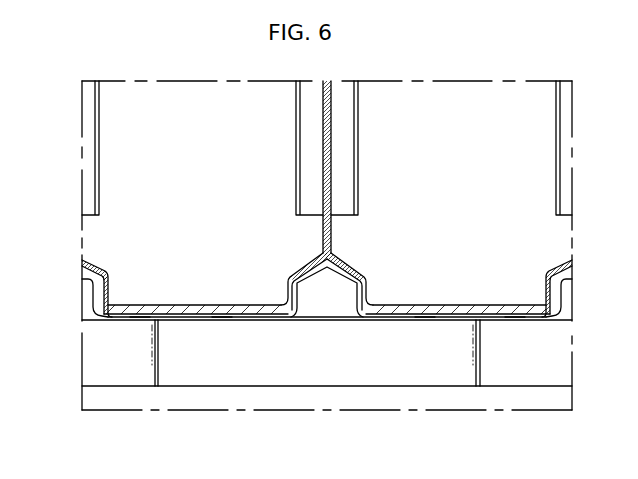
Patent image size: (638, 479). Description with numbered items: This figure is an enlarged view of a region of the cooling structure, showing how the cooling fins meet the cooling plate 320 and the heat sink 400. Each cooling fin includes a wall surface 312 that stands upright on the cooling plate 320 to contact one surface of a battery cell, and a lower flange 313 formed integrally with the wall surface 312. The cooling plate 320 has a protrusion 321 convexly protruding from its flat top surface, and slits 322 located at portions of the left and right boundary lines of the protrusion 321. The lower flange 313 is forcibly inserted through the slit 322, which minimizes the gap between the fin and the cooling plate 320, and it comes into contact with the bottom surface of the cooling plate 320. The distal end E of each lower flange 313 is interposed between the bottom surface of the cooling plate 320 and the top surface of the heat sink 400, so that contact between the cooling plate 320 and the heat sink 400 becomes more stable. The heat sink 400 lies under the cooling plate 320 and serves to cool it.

The wall surface 312 is at (323, 131).
The lower flange 313 is at (303, 263).
The cooling plate 320 is at (485, 290).
The protrusion 321 is at (312, 273).
The slit 322 is at (278, 305).
The heat sink 400 is at (90, 352).
The distal end E is at (143, 318).